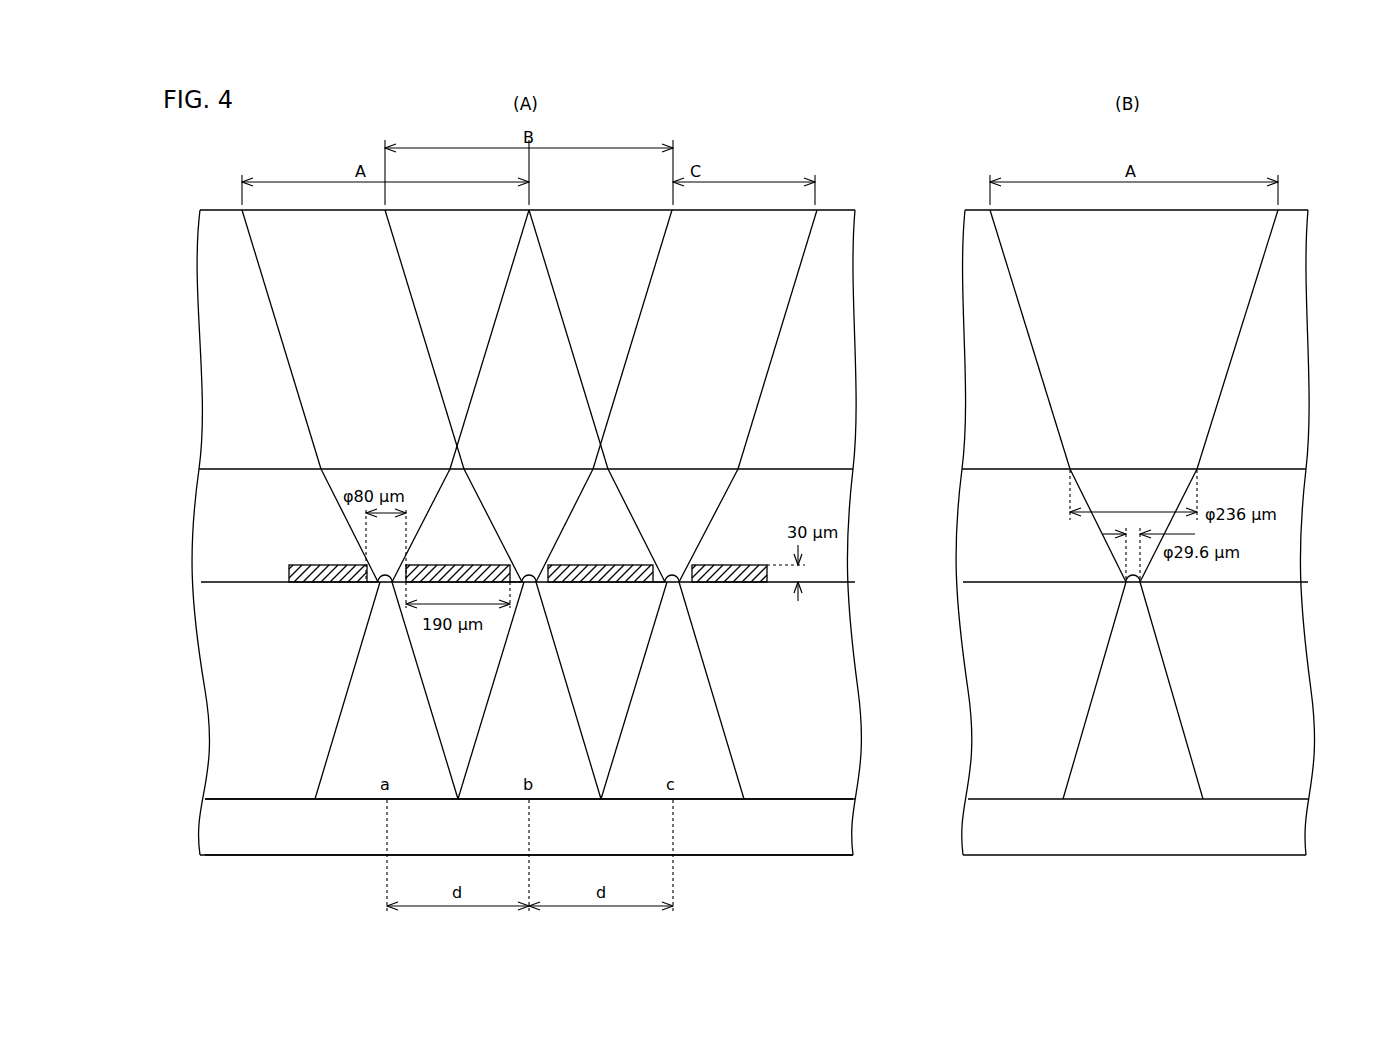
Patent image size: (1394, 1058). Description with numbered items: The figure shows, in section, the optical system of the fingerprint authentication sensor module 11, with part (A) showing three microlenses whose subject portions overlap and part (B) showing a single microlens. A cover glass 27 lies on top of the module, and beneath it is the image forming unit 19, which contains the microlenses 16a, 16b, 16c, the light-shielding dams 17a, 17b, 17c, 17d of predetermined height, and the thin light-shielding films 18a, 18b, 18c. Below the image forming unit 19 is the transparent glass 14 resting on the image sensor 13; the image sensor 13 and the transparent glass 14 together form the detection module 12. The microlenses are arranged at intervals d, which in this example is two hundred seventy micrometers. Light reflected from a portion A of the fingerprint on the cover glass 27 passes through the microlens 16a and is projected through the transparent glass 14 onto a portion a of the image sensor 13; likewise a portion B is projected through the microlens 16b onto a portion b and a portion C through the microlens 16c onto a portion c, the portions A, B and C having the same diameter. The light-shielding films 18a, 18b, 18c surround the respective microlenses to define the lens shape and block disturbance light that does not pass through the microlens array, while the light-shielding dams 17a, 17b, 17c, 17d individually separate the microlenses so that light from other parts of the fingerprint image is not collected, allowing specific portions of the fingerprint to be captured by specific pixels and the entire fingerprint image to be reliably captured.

The fingerprint authentication sensor module 11 is at (844, 191).
The detection module 12 is at (148, 673).
The image sensor 13 is at (222, 830).
The transparent glass 14 is at (222, 683).
The microlens 16a is at (384, 575).
The microlens 16b is at (529, 575).
The microlens 16c is at (673, 575).
The light-shielding dam 17a is at (298, 565).
The light-shielding dam 17b is at (463, 565).
The light-shielding dam 17c is at (608, 565).
The light-shielding dam 17d is at (747, 565).
The light-shielding film 18a is at (364, 566).
The light-shielding film 18b is at (515, 566).
The light-shielding film 18c is at (657, 566).
The image forming unit 19 is at (692, 504).
The cover glass 27 is at (222, 382).